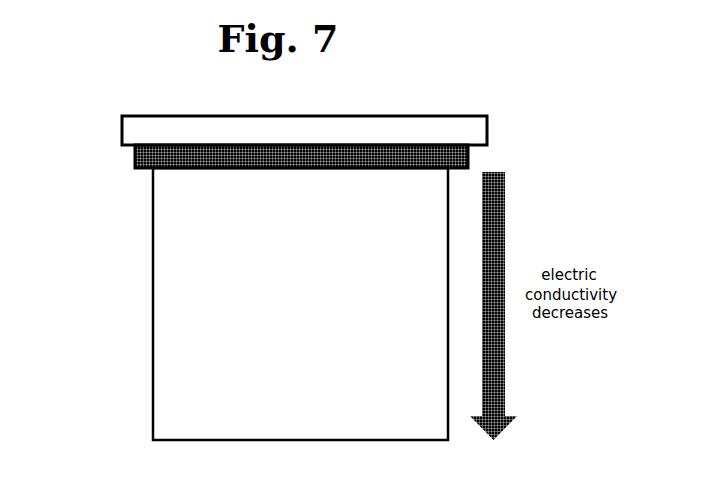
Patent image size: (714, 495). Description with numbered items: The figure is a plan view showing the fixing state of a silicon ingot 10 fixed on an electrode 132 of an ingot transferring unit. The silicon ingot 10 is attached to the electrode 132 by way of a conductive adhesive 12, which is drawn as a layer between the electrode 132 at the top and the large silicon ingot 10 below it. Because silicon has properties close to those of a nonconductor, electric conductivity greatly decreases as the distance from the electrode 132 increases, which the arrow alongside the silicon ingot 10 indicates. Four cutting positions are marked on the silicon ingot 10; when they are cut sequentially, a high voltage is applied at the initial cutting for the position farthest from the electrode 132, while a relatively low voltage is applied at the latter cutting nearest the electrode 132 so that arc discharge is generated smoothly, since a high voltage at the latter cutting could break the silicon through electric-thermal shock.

The electrode 132 is at (203, 133).
The conductive adhesive 12 is at (190, 158).
The silicon ingot 10 is at (191, 365).